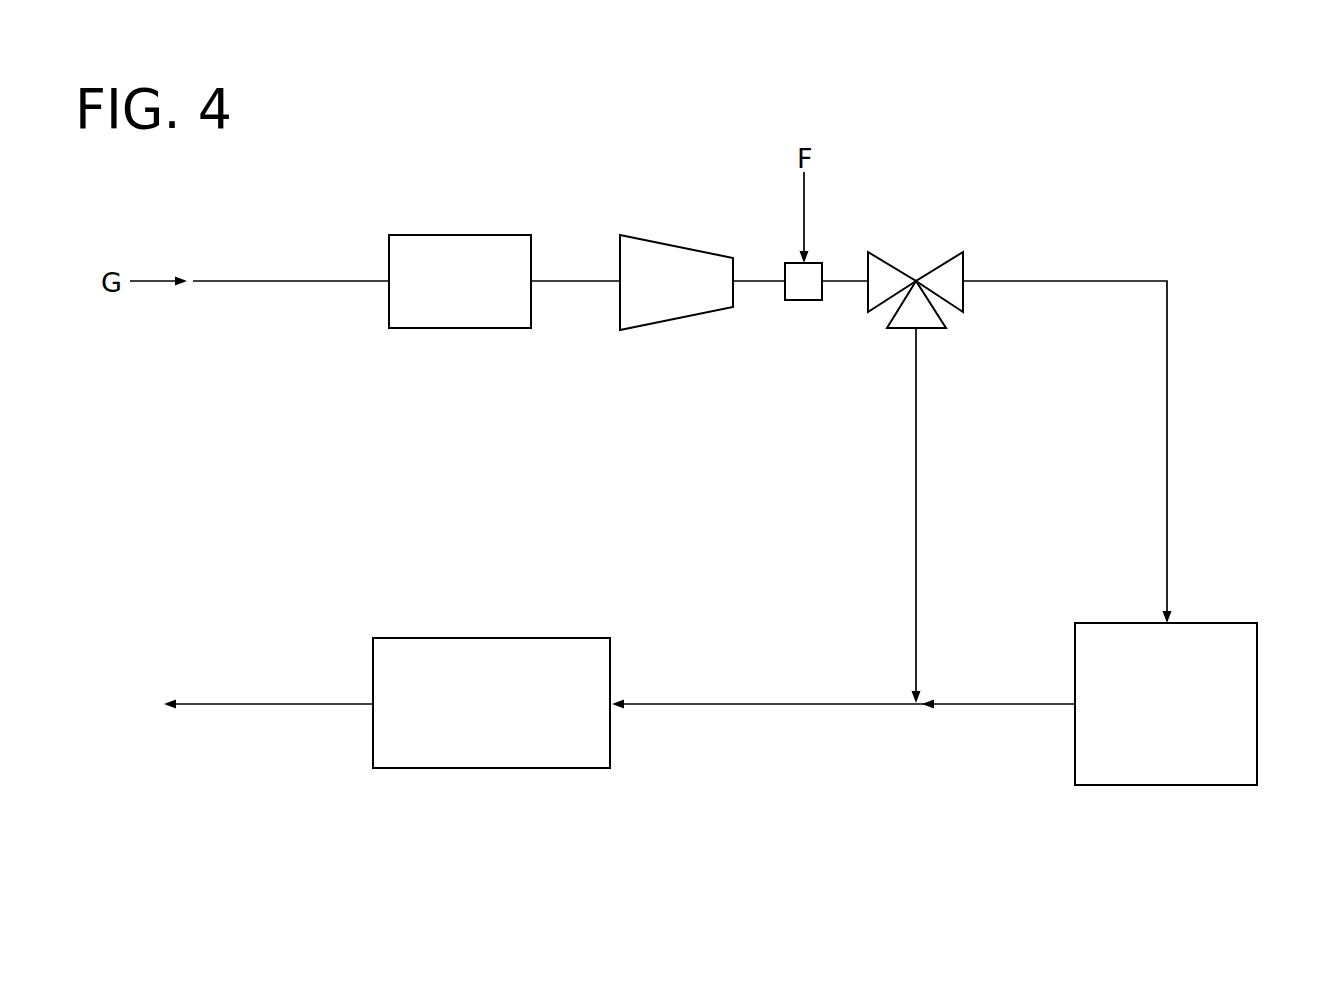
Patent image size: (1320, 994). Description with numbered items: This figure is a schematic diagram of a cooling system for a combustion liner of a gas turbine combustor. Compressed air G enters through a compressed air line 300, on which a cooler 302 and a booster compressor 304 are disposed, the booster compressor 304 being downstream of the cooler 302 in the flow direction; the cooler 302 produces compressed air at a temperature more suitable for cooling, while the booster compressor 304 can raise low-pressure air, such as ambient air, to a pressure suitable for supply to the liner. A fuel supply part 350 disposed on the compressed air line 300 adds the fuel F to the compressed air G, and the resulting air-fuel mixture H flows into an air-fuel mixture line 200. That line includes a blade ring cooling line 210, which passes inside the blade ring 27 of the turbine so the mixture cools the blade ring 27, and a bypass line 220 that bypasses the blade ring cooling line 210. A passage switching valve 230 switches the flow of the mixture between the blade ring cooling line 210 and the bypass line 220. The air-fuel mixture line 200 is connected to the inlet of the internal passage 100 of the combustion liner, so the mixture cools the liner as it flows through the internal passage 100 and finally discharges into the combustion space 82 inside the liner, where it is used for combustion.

The compressed air line 300 is at (300, 280).
The cooler 302 is at (459, 329).
The booster compressor 304 is at (680, 320).
The fuel supply part 350 is at (800, 303).
The passage switching valve 230 is at (897, 262).
The blade ring cooling line 210 is at (1167, 478).
The bypass line 220 is at (916, 475).
The air-fuel mixture line 200 is at (770, 707).
The blade ring 27 is at (1183, 718).
The internal passage 100 is at (517, 718).
The combustion space 82 is at (249, 704).